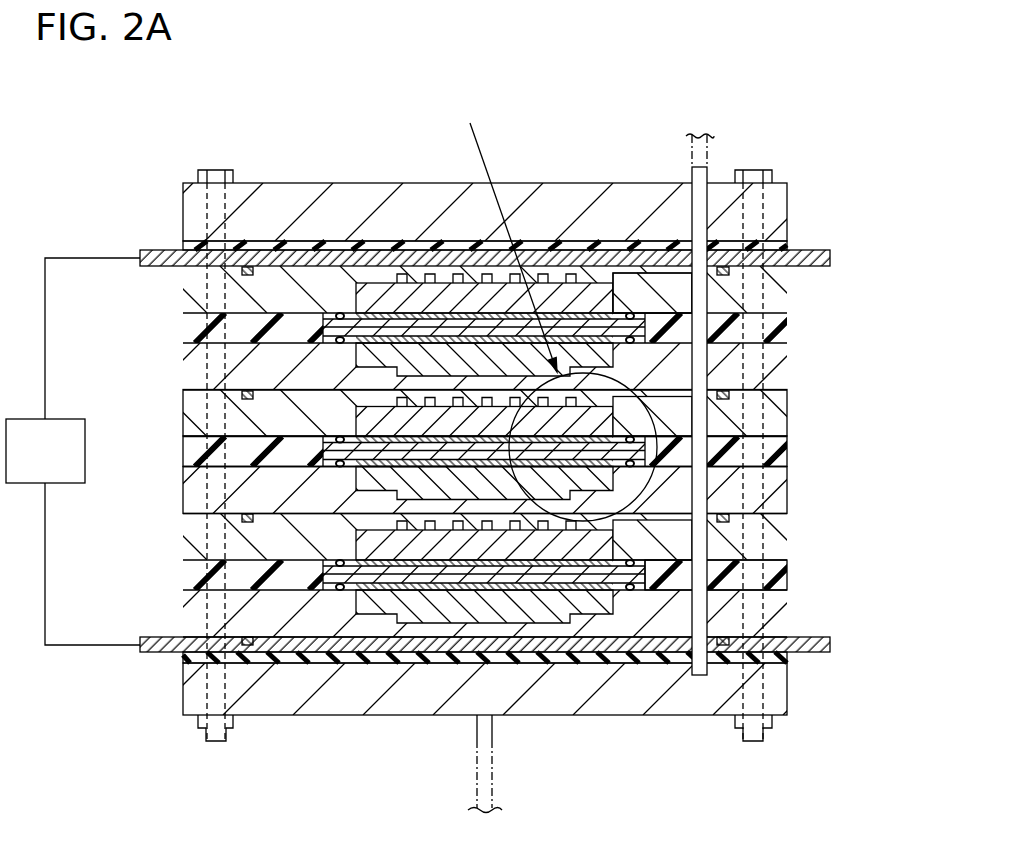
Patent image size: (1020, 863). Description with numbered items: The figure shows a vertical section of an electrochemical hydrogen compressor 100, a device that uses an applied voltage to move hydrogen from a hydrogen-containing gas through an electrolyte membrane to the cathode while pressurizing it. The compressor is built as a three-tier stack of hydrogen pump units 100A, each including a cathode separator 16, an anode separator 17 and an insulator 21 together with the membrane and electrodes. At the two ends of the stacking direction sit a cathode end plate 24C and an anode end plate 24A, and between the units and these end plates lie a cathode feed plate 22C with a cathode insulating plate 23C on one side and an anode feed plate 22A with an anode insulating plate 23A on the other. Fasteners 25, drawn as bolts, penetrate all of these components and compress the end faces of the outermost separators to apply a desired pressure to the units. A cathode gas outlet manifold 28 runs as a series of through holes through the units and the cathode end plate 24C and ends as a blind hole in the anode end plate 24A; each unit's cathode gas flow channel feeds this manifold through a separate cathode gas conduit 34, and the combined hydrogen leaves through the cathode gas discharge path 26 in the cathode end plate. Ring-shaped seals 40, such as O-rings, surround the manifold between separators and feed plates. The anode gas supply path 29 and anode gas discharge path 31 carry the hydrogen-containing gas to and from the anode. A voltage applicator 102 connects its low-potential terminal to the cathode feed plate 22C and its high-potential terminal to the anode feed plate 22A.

The electrochemical hydrogen compressor 100 is at (334, 75).
The hydrogen pump unit 100A is at (495, 372).
The voltage applicator 102 is at (68, 466).
The cathode separator 16 is at (782, 398).
The anode separator 17 is at (782, 497).
The insulator 21 is at (782, 446).
The anode feed plate 22A is at (831, 643).
The cathode feed plate 22C is at (831, 258).
The anode insulating plate 23A is at (786, 660).
The cathode insulating plate 23C is at (778, 247).
The anode end plate 24A is at (778, 688).
The cathode end plate 24C is at (778, 208).
The fasteners 25 is at (215, 168).
The cathode gas discharge path 26 is at (689, 168).
The cathode gas outlet manifold 28 is at (698, 576).
The anode gas supply path 29 is at (536, 774).
The anode gas discharge path 31 is at (493, 766).
The cathode gas conduit 34 is at (660, 276).
The seals 40 is at (734, 393).